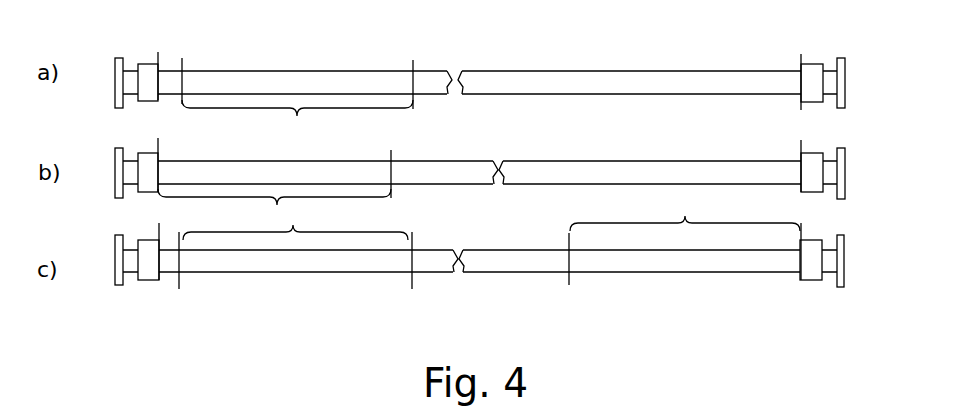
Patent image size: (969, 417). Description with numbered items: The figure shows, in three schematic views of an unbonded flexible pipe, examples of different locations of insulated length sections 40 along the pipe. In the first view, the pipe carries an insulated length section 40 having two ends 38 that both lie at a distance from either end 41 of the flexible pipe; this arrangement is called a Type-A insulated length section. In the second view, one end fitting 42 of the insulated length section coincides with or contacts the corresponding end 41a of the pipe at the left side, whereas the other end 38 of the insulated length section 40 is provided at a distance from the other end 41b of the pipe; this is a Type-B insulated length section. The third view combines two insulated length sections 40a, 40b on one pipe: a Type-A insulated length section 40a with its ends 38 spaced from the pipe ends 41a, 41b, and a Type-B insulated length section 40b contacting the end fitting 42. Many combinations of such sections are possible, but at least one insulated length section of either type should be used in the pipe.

The end of insulated length section 38 is at (184, 60).
The insulated length section 40 is at (285, 170).
The Type-A insulated length section 40a is at (321, 260).
The Type-B insulated length section 40b is at (685, 211).
The end of the flexible pipe 41 is at (157, 62).
The end of the pipe 41a is at (155, 150).
The other end of the pipe 41b is at (800, 153).
The end fitting 42 is at (160, 157).